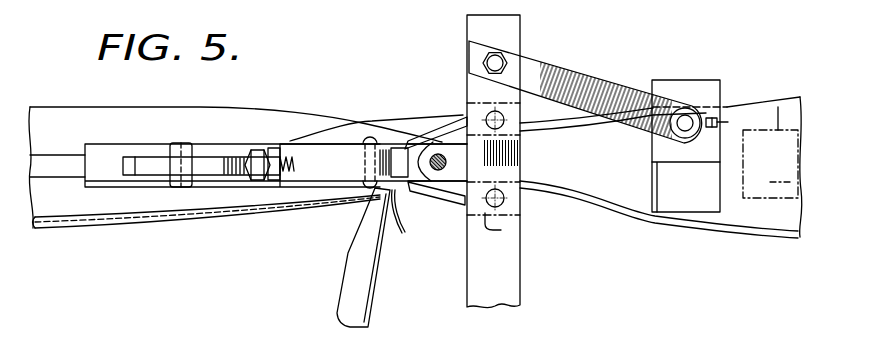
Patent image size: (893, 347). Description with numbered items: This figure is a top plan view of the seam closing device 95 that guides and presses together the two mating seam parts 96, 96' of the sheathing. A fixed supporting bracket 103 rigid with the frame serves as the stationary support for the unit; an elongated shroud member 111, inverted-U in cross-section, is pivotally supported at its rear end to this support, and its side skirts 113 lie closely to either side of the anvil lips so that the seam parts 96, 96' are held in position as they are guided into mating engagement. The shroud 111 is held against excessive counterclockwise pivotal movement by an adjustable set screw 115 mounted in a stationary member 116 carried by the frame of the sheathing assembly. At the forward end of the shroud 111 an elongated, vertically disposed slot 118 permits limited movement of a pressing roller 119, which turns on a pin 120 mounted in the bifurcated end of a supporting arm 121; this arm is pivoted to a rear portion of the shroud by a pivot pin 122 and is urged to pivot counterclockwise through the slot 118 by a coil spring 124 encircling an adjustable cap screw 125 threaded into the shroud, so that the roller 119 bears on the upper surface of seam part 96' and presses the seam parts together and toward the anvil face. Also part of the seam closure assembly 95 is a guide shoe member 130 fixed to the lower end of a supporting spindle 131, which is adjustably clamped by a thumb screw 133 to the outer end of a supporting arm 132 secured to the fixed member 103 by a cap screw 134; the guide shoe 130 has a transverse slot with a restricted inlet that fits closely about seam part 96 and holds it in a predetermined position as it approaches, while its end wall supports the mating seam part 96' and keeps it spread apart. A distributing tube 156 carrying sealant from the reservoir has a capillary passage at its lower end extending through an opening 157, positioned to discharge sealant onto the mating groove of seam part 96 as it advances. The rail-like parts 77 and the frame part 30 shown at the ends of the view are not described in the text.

The frame 30 is at (778, 107).
The rail 77 is at (173, 208).
The seam closing device 95 is at (397, 88).
The seam part 96 is at (522, 93).
The mating seam part 96' is at (416, 223).
The fixed supporting bracket 103 is at (513, 283).
The shroud member 111 is at (405, 143).
The side skirts 113 is at (430, 118).
The adjustable set screw 115 is at (447, 162).
The stationary member 116 is at (503, 230).
The slot 118 is at (133, 157).
The pressing roller 119 is at (147, 160).
The pin 120 is at (180, 143).
The supporting arm 121 is at (297, 157).
The pivot pin 122 is at (365, 140).
The coil spring 124 is at (287, 181).
The adjustable cap screw 125 is at (253, 157).
The guide shoe member 130 is at (667, 80).
The supporting spindle 131 is at (680, 127).
The supporting arm 132 is at (550, 67).
The thumb screw 133 is at (720, 122).
The cap screw 134 is at (487, 53).
The distributing tube 156 is at (352, 282).
The opening 157 is at (393, 190).